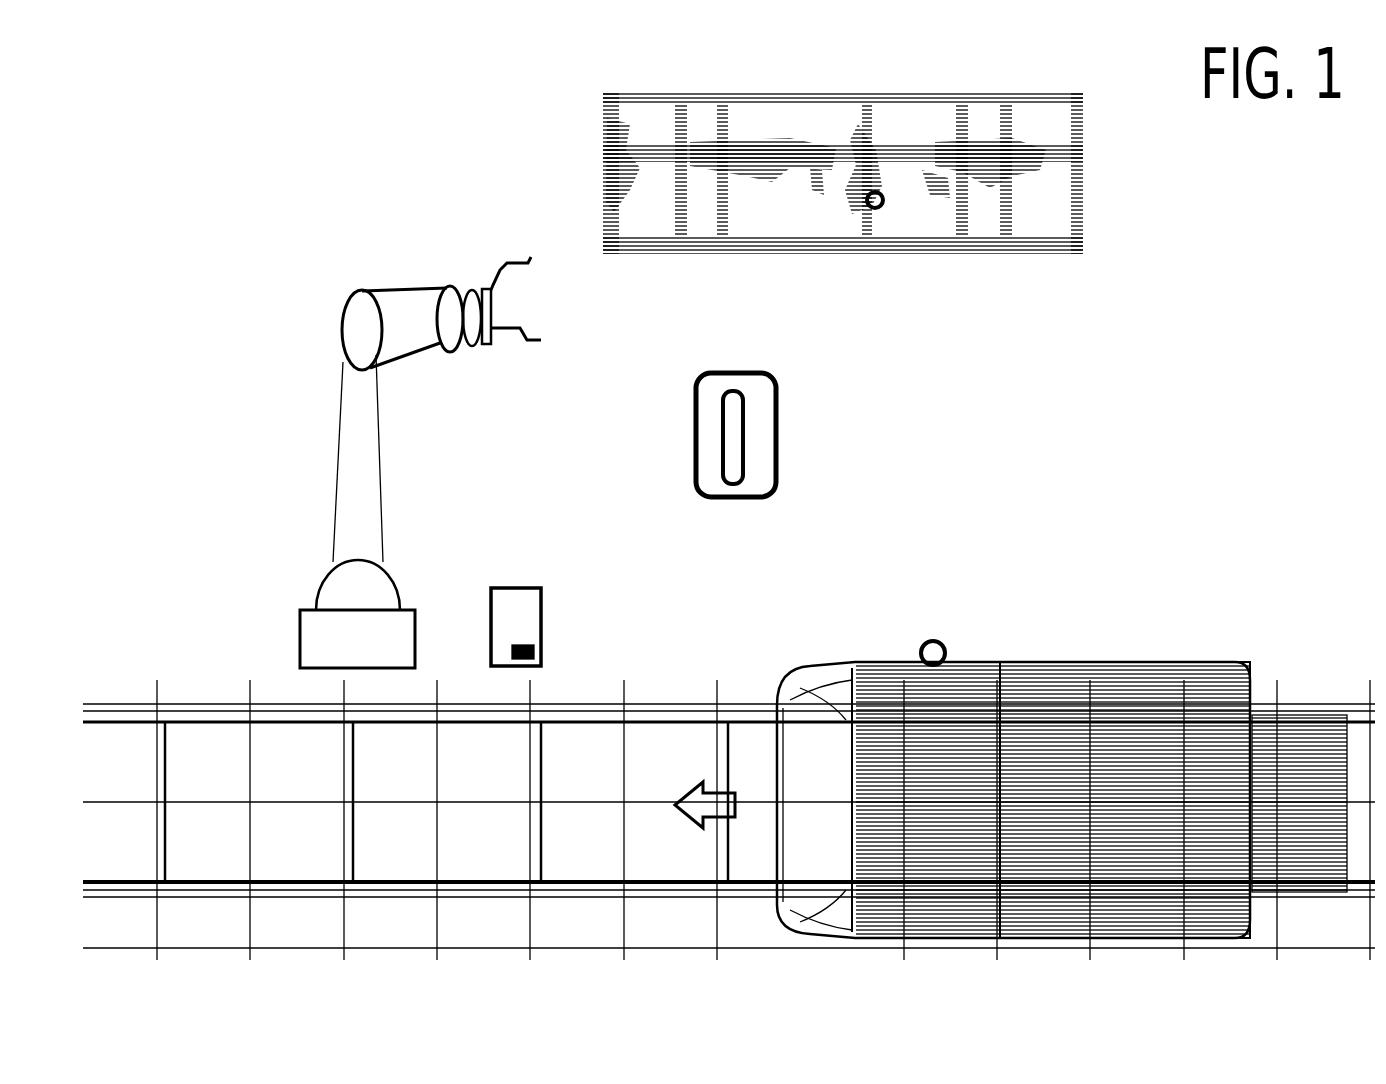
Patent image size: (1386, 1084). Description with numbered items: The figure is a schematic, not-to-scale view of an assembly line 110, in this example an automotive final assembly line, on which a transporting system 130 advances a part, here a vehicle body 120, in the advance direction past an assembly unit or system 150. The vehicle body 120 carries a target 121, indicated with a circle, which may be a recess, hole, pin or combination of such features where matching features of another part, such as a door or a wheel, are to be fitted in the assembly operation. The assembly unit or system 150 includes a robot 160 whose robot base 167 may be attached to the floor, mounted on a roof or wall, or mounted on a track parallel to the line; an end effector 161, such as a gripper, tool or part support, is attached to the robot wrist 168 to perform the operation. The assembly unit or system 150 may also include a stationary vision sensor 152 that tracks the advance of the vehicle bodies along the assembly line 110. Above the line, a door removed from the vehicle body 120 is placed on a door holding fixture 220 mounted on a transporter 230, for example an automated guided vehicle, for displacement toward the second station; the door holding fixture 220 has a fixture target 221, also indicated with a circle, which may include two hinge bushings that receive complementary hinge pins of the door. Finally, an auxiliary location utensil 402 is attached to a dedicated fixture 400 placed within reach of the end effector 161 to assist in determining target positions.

The assembly line 110 is at (1213, 417).
The vehicle body 120 is at (1177, 665).
The target 121 is at (945, 645).
The transporting system 130 is at (130, 800).
The assembly unit or system 150 is at (312, 317).
The stationary vision sensor 152 is at (503, 650).
The robot 160 is at (362, 477).
The end effector 161 is at (490, 283).
The robot base 167 is at (342, 637).
The robot wrist 168 is at (480, 322).
The door holding fixture 220 is at (868, 188).
The fixture target 221 is at (887, 190).
The transporter 230 is at (773, 102).
The dedicated fixture 400 is at (777, 438).
The auxiliary location utensil 402 is at (745, 458).